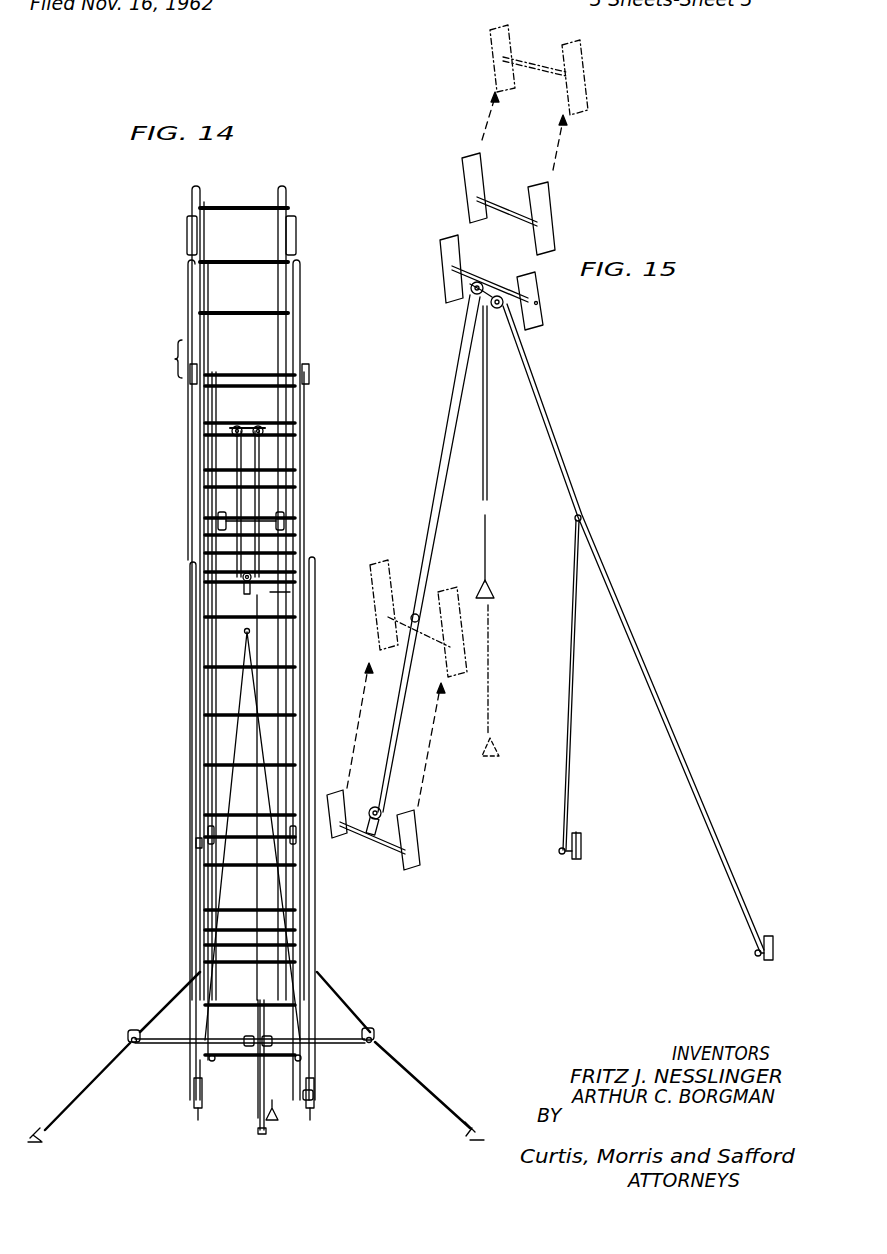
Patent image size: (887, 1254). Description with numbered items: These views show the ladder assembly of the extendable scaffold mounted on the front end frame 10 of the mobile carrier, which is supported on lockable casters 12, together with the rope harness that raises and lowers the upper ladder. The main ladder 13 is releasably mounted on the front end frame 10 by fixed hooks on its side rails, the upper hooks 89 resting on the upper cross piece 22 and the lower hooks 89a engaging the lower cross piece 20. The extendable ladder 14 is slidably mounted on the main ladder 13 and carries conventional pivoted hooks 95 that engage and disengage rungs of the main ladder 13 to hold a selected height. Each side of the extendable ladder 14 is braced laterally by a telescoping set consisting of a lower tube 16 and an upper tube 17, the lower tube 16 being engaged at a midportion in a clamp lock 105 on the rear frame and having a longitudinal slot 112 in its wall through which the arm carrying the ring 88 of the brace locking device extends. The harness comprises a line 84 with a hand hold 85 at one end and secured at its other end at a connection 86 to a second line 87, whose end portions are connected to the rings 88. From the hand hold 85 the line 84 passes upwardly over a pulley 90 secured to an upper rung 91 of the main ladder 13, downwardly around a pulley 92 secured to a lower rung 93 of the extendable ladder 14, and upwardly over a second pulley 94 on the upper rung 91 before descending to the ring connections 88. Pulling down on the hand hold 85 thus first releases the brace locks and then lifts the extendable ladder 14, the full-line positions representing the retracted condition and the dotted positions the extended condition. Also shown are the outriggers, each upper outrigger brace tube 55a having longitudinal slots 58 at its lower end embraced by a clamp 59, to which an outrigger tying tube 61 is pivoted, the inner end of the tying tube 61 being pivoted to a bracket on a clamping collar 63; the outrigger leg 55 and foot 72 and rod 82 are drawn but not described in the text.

In FIG. 14, the front end frame 10 is at (196, 886).
In FIG. 14, the wheels or casters 12 is at (197, 1112).
In FIG. 14, the main ladder 13 is at (207, 635).
In FIG. 15, the main ladder 13 is at (440, 255).
In FIG. 14, the extendable ladder 14 is at (307, 375).
In FIG. 15, the extendable ladder 14 is at (485, 62).
In FIG. 14, the lower brace tube 16 is at (305, 662).
In FIG. 15, the lower brace tube 16 is at (580, 848).
In FIG. 14, the upper brace tube 17 is at (192, 316).
In FIG. 14, the lower cross piece 20 is at (314, 1098).
In FIG. 14, the upper cross piece 22 is at (262, 845).
In FIG. 14, the outrigger leg 55 is at (414, 1090).
In FIG. 14, the upper outrigger brace tube 55a is at (173, 995).
In FIG. 14, the longitudinal slots 58 is at (135, 1028).
In FIG. 14, the clamp 59 is at (128, 1038).
In FIG. 14, the outrigger tying tube 61 is at (170, 1048).
In FIG. 14, the clamping collar 63 is at (258, 1038).
In FIG. 14, the foot pad 72 is at (30, 1140).
In FIG. 14, the rod 82 is at (262, 1138).
In FIG. 14, the line 84 is at (268, 990).
In FIG. 15, the line 84 is at (488, 440).
In FIG. 14, the hand hold 85 is at (277, 1115).
In FIG. 15, the hand hold 85 is at (496, 592).
In FIG. 14, the connection 86 is at (250, 632).
In FIG. 15, the connection 86 is at (582, 514).
In FIG. 14, the second line 87 is at (235, 748).
In FIG. 15, the second line 87 is at (625, 630).
In FIG. 15, the ring 88 is at (560, 854).
In FIG. 14, the upper hooks 89 is at (208, 833).
In FIG. 14, the lower hooks 89a is at (212, 1062).
In FIG. 14, the pulley 90 is at (263, 428).
In FIG. 15, the pulley 90 is at (470, 288).
In FIG. 14, the upper rung 91 is at (247, 411).
In FIG. 15, the upper rung 91 is at (467, 272).
In FIG. 14, the pulley 92 is at (243, 575).
In FIG. 15, the pulley 92 is at (372, 808).
In FIG. 14, the lower rung 93 is at (298, 600).
In FIG. 15, the lower rung 93 is at (352, 832).
In FIG. 14, the second pulley 94 is at (233, 427).
In FIG. 15, the second pulley 94 is at (503, 308).
In FIG. 14, the pivoted hooks 95 is at (288, 521).
In FIG. 14, the clamp lock 105 is at (196, 843).
In FIG. 15, the longitudinal slot 112 is at (582, 858).